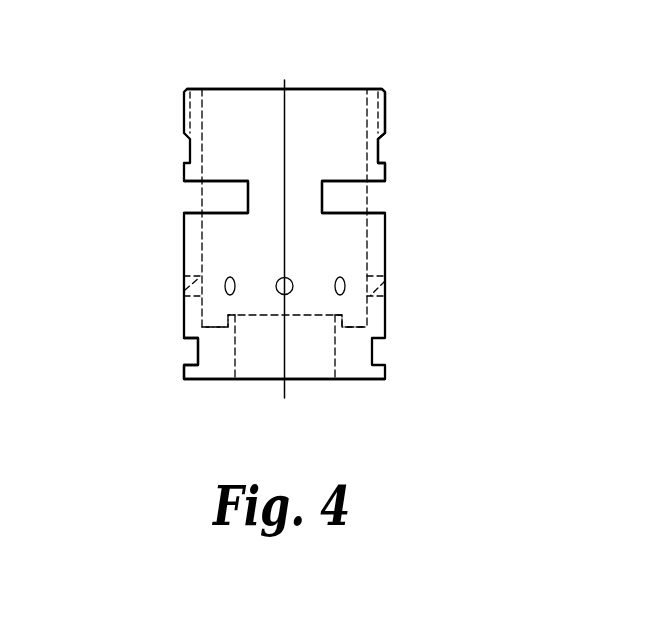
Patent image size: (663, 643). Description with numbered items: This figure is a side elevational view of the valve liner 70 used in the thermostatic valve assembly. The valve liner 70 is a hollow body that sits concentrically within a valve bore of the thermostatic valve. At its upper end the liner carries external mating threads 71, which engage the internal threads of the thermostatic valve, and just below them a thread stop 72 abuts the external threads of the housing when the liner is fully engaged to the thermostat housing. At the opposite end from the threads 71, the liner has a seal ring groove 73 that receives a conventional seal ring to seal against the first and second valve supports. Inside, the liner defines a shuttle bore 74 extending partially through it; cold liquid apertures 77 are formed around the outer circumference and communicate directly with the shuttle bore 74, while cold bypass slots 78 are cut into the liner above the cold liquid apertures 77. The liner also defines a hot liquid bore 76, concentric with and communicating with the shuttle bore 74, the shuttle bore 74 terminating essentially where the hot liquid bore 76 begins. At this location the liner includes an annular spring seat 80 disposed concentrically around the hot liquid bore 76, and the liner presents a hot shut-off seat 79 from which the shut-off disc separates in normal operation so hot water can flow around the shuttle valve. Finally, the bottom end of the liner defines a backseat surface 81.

The valve liner 70 is at (392, 230).
The external mating threads 71 is at (384, 110).
The thread stop 72 is at (382, 165).
The seal ring groove 73 is at (188, 365).
The shuttle bore 74 is at (367, 127).
The hot liquid bore 76 is at (335, 350).
The cold liquid apertures 77 is at (230, 277).
The cold bypass slots 78 is at (222, 183).
The hot shut-off seat 79 is at (232, 316).
The annular spring seat 80 is at (354, 329).
The backseat surface 81 is at (205, 379).